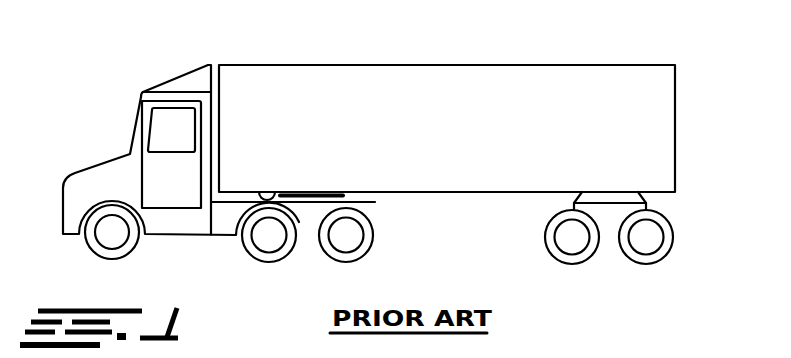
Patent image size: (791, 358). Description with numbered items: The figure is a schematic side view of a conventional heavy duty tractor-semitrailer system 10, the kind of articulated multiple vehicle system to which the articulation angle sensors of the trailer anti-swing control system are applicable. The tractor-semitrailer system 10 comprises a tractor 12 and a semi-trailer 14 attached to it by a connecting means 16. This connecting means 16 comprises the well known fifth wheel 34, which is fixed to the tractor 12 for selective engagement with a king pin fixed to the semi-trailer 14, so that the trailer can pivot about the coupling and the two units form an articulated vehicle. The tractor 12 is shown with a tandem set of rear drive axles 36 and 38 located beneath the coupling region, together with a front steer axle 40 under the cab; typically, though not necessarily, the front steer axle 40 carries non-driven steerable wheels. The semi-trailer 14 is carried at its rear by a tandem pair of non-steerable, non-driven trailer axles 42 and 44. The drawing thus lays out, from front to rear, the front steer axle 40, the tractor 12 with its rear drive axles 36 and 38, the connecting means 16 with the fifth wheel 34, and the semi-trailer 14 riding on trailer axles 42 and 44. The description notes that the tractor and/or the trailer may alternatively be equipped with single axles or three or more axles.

The tractor-semitrailer system 10 is at (383, 166).
The tractor 12 is at (152, 77).
The semi-trailer 14 is at (573, 90).
The connecting means 16 is at (306, 180).
The fifth wheel 34 is at (270, 194).
The rear drive axle 36 is at (272, 262).
The rear drive axle 38 is at (347, 262).
The front steer axle 40 is at (115, 258).
The trailer axle 42 is at (572, 264).
The trailer axle 44 is at (655, 264).